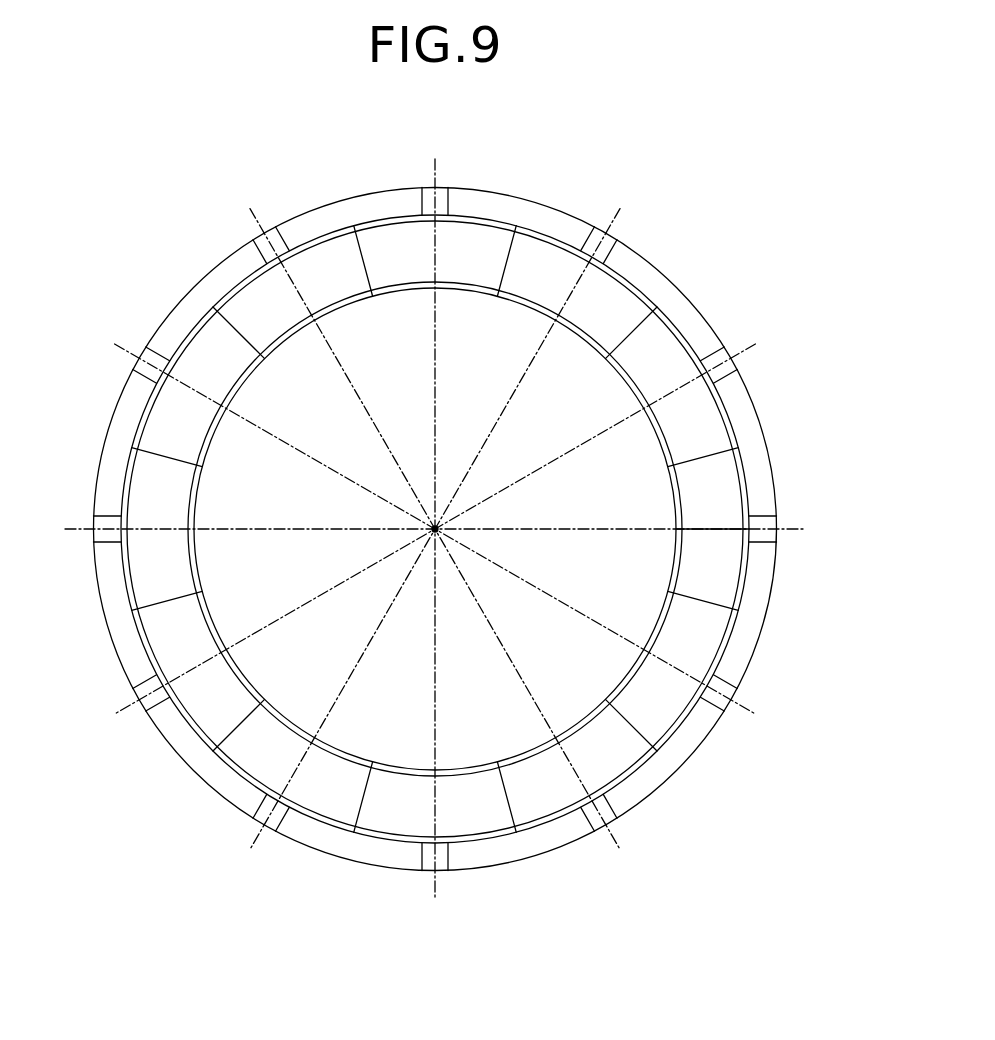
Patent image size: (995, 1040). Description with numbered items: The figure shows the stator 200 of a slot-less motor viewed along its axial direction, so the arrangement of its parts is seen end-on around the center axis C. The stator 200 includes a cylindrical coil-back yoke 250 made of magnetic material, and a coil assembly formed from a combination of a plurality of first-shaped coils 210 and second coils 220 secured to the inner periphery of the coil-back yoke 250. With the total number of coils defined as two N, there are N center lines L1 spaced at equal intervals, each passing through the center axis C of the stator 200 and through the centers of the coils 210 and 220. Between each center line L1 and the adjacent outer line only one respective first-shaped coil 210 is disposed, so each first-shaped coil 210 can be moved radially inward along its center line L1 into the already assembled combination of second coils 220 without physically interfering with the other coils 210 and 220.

The stator 200 is at (756, 182).
The first-shaped coil 210 is at (556, 255).
The second coil 220 is at (480, 255).
The coil-back yoke 250 is at (358, 207).
The center line L1 is at (440, 529).
The center axis C is at (437, 525).